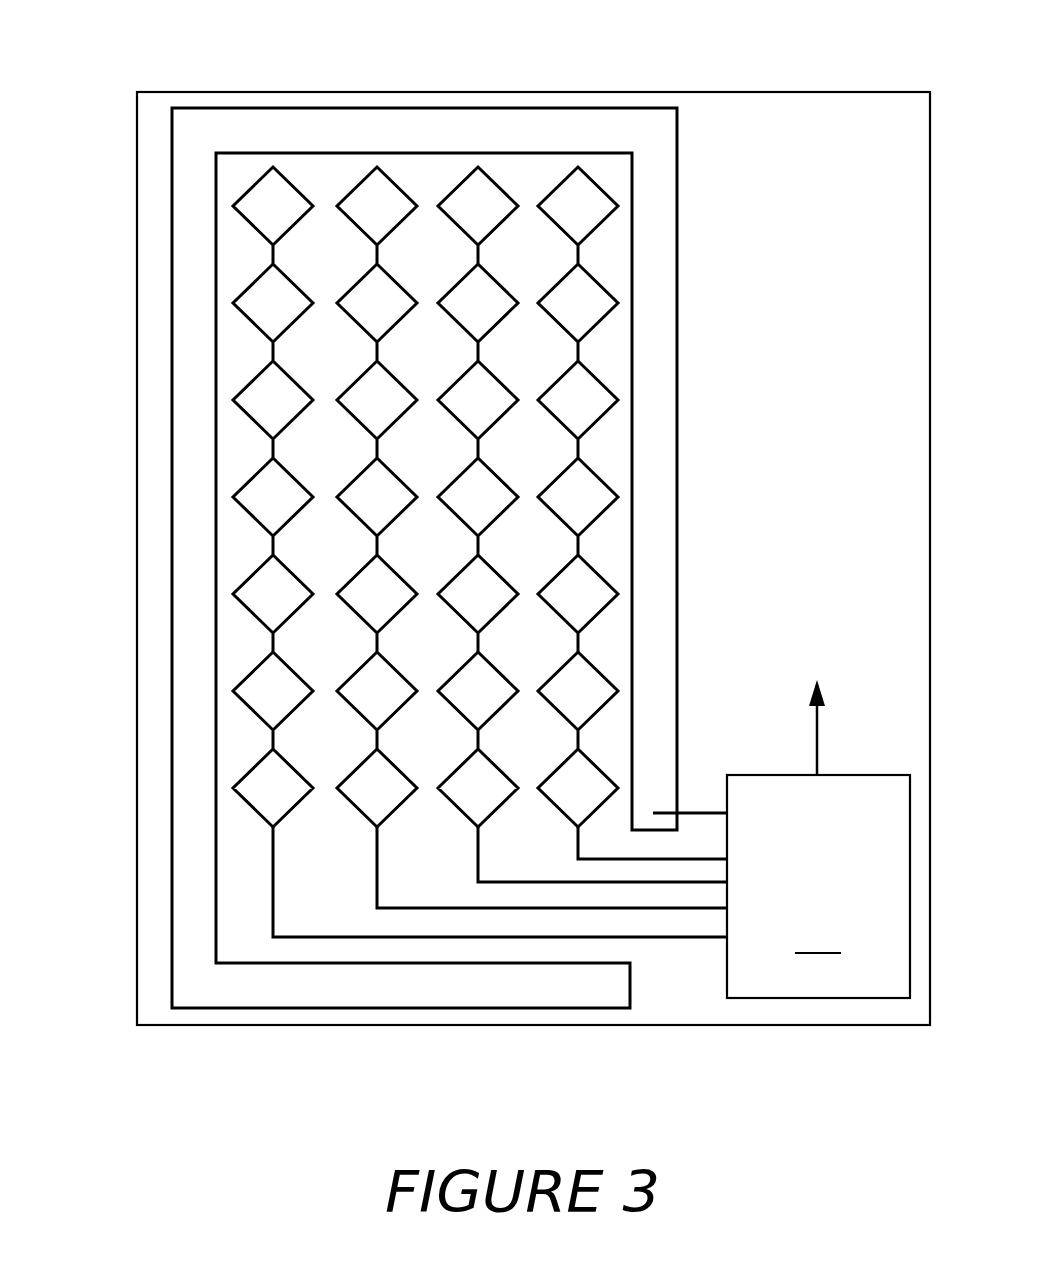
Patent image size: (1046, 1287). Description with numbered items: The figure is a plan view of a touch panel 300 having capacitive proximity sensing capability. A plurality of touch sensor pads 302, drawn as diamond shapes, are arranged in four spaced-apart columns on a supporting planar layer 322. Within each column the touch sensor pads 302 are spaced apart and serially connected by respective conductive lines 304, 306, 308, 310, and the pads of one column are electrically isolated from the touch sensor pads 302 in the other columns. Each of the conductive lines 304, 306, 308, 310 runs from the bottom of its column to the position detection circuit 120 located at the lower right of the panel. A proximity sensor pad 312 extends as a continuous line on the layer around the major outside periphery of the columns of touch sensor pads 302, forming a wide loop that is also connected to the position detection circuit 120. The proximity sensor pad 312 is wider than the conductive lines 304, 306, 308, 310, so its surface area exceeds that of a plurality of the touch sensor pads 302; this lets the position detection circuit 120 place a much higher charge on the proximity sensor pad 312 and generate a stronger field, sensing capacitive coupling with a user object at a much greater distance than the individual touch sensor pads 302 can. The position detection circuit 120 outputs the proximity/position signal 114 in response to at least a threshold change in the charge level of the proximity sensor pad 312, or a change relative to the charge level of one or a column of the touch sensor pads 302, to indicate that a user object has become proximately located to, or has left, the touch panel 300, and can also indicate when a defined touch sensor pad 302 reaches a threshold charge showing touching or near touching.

The touch panel 300 is at (437, 68).
The touch sensor pads 302 is at (425, 497).
The conductive line 304 is at (273, 890).
The conductive line 306 is at (377, 888).
The conductive line 308 is at (475, 867).
The conductive line 310 is at (575, 843).
The proximity sensor pad 312 is at (660, 275).
The supporting planar layer 322 is at (148, 457).
The position detection circuit 120 is at (818, 886).
The proximity/position signal 114 is at (818, 718).